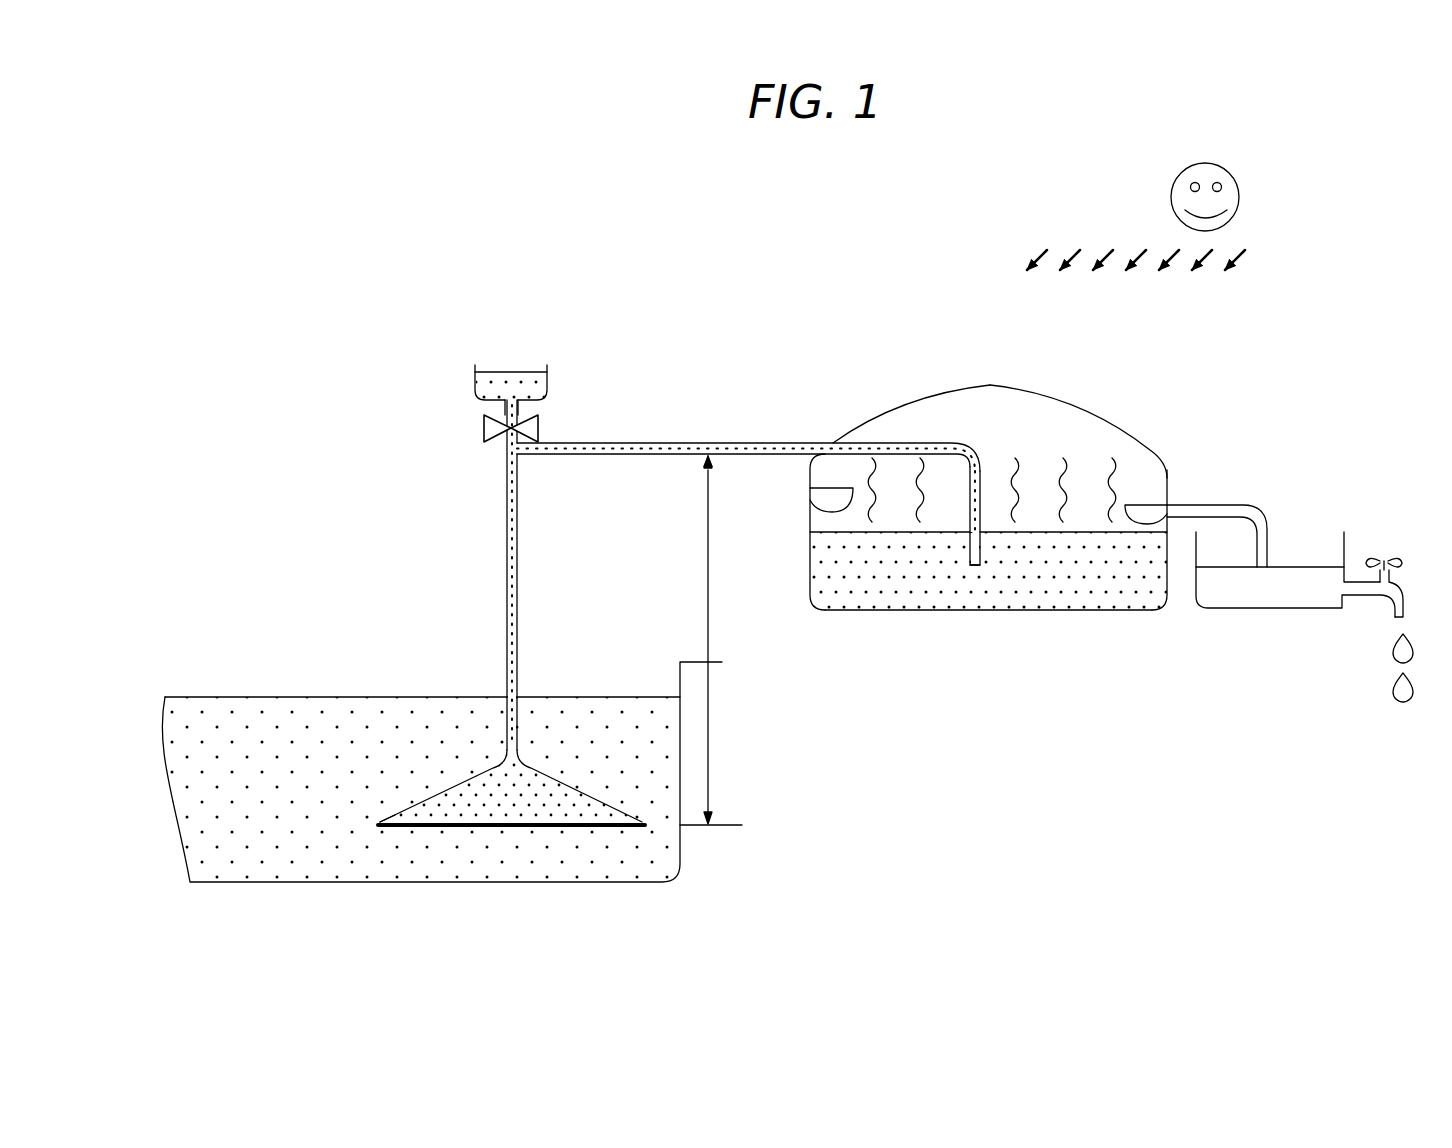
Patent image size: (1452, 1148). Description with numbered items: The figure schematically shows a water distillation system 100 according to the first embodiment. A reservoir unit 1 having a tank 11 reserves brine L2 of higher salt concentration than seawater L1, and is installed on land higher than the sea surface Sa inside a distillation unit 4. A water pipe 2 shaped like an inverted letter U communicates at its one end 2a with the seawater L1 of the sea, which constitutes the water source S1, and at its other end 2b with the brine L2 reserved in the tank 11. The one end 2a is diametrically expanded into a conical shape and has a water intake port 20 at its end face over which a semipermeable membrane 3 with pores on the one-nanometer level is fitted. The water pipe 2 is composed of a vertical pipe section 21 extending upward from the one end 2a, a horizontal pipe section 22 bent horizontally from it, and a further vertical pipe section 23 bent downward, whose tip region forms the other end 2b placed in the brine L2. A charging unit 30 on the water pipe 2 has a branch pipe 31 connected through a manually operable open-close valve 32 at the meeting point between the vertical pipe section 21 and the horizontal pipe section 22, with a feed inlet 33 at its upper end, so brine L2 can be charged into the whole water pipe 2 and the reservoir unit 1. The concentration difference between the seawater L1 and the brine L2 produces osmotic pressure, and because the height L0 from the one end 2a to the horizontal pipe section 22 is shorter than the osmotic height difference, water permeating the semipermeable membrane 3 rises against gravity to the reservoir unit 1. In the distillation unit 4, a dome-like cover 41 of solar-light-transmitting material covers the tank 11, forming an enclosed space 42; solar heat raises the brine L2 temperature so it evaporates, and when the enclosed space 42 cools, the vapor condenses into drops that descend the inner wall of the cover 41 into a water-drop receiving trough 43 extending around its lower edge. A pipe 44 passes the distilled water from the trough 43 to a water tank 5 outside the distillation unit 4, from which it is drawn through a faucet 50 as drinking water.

The water distillation system 100 is at (804, 632).
The reservoir unit 1 is at (988, 568).
The tank 11 is at (882, 612).
The water pipe 2 is at (705, 572).
The one end of the water pipe 2a is at (415, 805).
The other end of the water pipe 2b is at (969, 548).
The water intake port 20 is at (605, 828).
The vertical pipe section 21 is at (505, 622).
The horizontal pipe section 22 is at (672, 442).
The vertical pipe section 23 is at (969, 523).
The semipermeable membrane 3 is at (493, 802).
The charging unit 30 is at (460, 382).
The branch pipe 31 is at (505, 416).
The open-close valve 32 is at (484, 425).
The feed inlet 33 is at (545, 366).
The distillation unit 4 is at (1007, 463).
The cover 41 is at (915, 405).
The enclosed space 42 is at (1040, 415).
The water-drop receiving trough 43 is at (811, 510).
The pipe 44 is at (1198, 505).
The water tank 5 is at (1196, 578).
The faucet 50 is at (1370, 555).
The water source S1 is at (442, 786).
The sea surface Sa is at (296, 696).
The height L0 is at (704, 640).
The seawater L1 is at (296, 858).
The brine L2 is at (1078, 590).